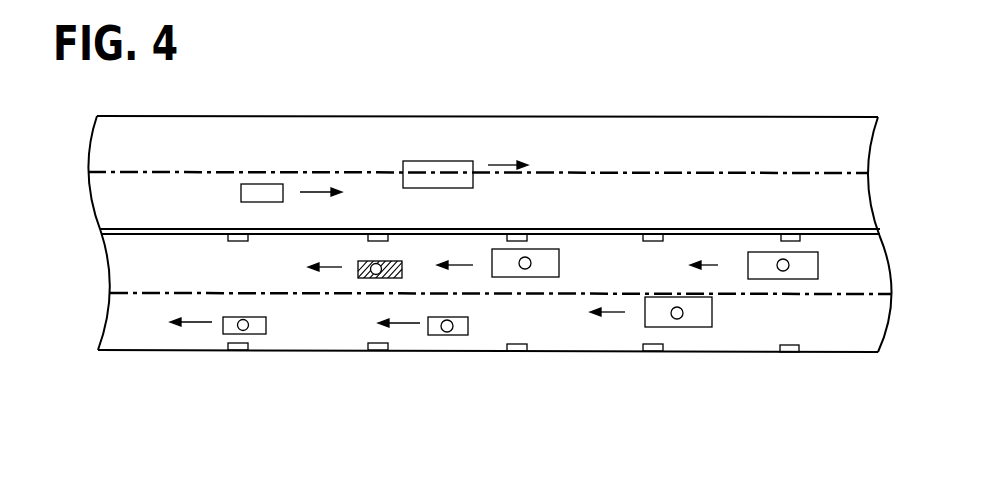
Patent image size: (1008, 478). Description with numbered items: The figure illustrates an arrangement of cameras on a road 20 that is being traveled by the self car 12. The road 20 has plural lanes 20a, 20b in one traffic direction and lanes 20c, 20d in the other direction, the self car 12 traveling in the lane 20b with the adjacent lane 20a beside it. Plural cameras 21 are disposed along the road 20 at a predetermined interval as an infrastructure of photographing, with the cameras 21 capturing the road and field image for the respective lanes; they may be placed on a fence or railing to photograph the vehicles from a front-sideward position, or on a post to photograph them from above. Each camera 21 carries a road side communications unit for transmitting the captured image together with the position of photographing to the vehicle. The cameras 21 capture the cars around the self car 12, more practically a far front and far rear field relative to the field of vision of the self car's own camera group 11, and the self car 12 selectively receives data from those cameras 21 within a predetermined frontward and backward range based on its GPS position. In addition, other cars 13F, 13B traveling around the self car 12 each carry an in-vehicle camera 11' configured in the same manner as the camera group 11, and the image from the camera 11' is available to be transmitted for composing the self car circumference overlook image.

The road 20 is at (147, 340).
The lane 20a is at (122, 322).
The lane 20b is at (122, 268).
The lane 20c is at (122, 148).
The lane 20d is at (122, 200).
The camera 21 is at (250, 229).
The camera group 11 is at (404, 255).
The in-vehicle camera 11' is at (514, 296).
The self car 12 is at (378, 261).
The other car 13B is at (559, 263).
The other car 13F is at (266, 325).